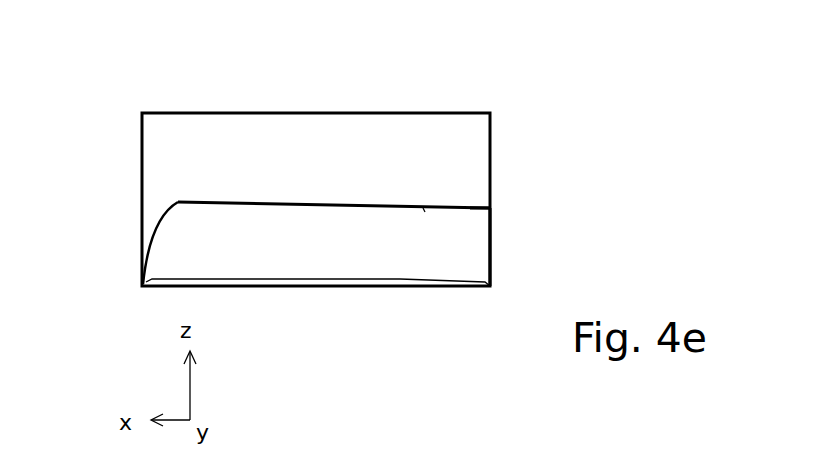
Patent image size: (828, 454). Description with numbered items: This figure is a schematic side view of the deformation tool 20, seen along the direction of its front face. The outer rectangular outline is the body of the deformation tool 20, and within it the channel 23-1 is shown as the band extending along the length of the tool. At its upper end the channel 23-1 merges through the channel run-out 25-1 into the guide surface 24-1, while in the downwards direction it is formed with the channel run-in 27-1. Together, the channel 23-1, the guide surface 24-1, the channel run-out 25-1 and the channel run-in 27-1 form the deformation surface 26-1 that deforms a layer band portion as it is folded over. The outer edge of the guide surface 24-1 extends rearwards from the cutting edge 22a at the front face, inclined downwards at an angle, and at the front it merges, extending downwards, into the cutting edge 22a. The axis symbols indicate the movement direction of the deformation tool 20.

The deformation tool 20 is at (220, 112).
The cutting edge 22a is at (140, 230).
The channel 23-1 is at (492, 243).
The guide surface 24-1 is at (425, 212).
The channel run-out 25-1 is at (492, 207).
The deformation surface 26-1 is at (289, 239).
The channel run-in 27-1 is at (232, 281).